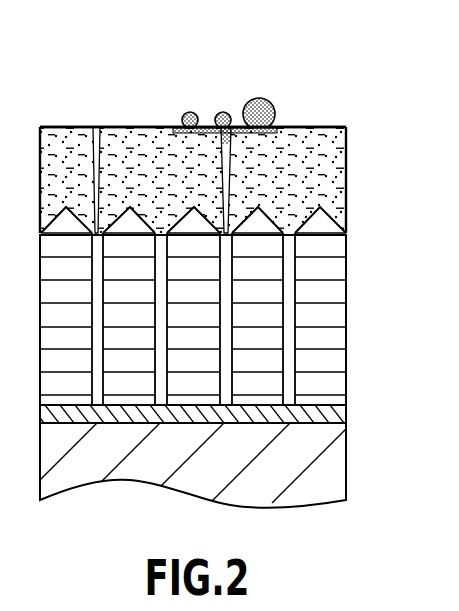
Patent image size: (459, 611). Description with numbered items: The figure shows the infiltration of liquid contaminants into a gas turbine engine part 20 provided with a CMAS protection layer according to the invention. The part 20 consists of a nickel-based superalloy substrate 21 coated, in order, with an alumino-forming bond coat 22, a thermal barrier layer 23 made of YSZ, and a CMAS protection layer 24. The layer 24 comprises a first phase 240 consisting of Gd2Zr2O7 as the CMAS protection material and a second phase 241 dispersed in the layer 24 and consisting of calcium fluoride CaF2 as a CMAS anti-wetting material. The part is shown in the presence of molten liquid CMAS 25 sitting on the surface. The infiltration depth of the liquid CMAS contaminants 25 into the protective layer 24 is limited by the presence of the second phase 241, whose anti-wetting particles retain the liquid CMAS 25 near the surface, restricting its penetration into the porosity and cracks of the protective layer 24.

The part 20 is at (326, 95).
The nickel-based superalloy substrate 21 is at (335, 474).
The alumino-forming bond coat 22 is at (345, 413).
The thermal barrier layer 23 is at (345, 336).
The CMAS protection layer 24 is at (220, 180).
The first phase 240 is at (325, 152).
The second phase 241 is at (330, 193).
The liquid CMAS 25 is at (256, 100).